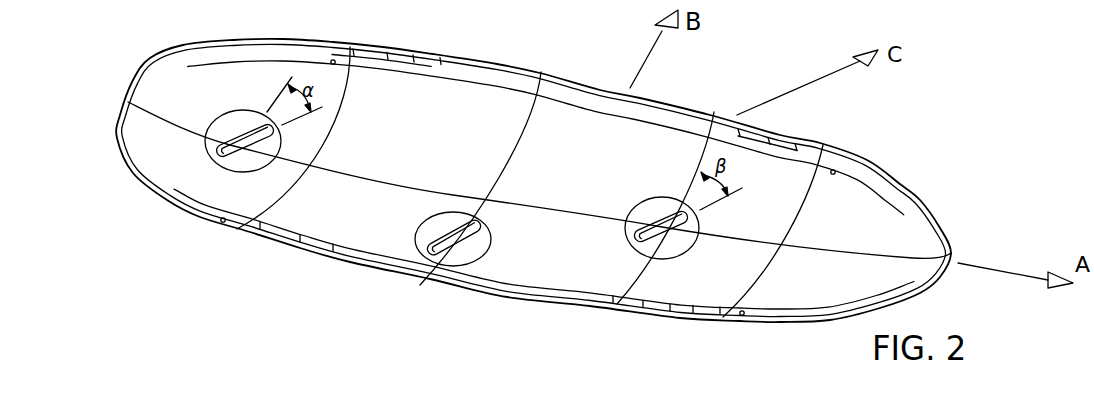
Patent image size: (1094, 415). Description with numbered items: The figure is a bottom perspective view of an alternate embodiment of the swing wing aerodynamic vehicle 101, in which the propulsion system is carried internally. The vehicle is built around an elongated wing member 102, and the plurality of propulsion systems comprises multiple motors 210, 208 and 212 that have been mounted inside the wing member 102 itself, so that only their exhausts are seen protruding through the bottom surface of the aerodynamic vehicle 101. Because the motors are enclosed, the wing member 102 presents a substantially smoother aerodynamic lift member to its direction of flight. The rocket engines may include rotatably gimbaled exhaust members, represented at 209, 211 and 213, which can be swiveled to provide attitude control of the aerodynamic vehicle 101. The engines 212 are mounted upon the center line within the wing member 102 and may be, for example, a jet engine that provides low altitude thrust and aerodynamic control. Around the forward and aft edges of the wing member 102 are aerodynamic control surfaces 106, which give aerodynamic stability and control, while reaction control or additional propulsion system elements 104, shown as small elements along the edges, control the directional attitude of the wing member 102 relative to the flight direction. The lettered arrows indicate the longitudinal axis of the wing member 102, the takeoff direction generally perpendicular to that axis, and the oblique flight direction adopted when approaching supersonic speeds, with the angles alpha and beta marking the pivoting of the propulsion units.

The aerodynamic vehicle 101 is at (457, 292).
The wing member 102 is at (522, 87).
The additional propulsion system elements 104 is at (333, 59).
The aerodynamic control surfaces 106 is at (400, 54).
The motor 208 is at (668, 239).
The gimbaled exhaust member 209 is at (655, 203).
The motor 210 is at (231, 150).
The gimbaled exhaust member 211 is at (228, 120).
The motor 212 is at (470, 233).
The gimbaled exhaust member 213 is at (427, 232).